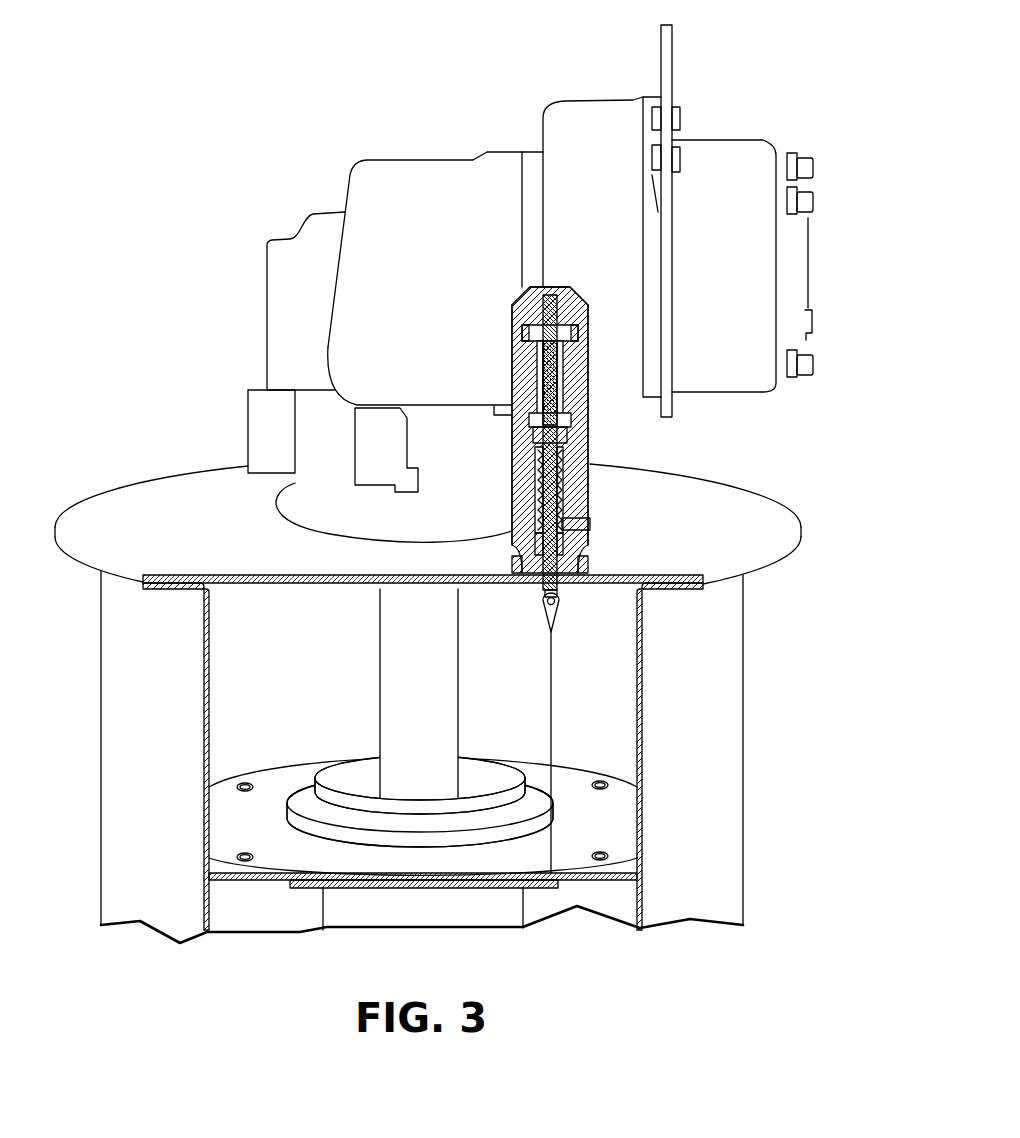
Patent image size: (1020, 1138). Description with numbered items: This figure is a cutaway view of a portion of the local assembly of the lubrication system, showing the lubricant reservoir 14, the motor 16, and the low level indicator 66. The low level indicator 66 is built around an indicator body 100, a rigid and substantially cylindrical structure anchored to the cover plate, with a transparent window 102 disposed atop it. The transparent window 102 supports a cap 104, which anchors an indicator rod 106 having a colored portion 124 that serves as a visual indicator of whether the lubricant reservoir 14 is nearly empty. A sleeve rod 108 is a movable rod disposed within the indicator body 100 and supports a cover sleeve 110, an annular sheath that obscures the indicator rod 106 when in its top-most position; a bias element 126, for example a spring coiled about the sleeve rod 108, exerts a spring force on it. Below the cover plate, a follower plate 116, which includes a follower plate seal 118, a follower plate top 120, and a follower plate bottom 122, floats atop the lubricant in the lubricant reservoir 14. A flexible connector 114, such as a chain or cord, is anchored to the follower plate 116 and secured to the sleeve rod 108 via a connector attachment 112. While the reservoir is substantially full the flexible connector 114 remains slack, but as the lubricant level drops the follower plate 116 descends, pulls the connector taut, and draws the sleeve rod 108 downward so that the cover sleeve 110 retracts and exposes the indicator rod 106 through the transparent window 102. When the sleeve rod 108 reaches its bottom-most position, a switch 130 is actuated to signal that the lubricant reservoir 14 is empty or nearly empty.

The lubricant reservoir 14 is at (140, 838).
The motor 16 is at (377, 187).
The low level indicator 66 is at (585, 263).
The indicator body 100 is at (589, 508).
The transparent window 102 is at (588, 360).
The cap 104 is at (528, 302).
The indicator rod 106 is at (533, 328).
The sleeve rod 108 is at (590, 522).
The cover sleeve 110 is at (590, 407).
The connector attachment 112 is at (557, 601).
The flexible connector 114 is at (553, 695).
The follower plate 116 is at (615, 837).
The follower plate seal 118 is at (615, 884).
The follower plate top 120 is at (587, 810).
The follower plate bottom 122 is at (490, 882).
The colored portion 124 is at (548, 377).
The bias element 126 is at (557, 480).
The switch 130 is at (590, 524).